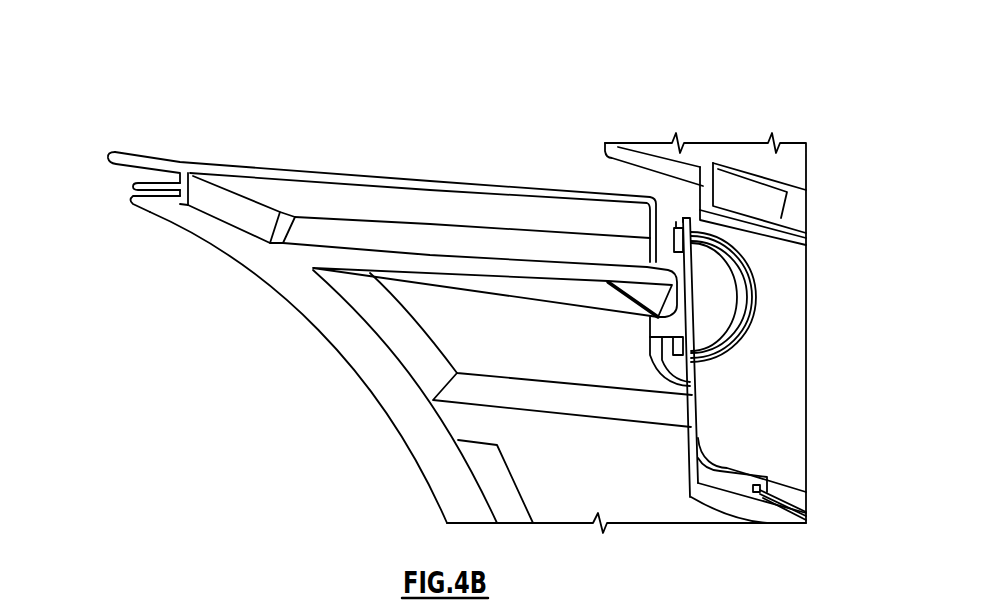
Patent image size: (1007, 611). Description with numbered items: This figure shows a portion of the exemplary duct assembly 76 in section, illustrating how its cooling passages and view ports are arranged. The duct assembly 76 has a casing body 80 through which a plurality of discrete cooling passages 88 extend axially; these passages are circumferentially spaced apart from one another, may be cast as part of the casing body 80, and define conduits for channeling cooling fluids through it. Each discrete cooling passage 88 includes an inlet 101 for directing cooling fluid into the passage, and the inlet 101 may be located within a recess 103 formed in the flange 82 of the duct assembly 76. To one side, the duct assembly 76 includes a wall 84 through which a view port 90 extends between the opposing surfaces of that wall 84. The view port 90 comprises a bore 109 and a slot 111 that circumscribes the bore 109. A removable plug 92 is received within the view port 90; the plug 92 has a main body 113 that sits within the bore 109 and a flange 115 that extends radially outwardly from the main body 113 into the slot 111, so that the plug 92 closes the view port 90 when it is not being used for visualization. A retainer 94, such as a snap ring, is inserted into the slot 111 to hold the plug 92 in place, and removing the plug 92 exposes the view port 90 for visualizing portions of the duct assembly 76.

The duct assembly 76 is at (470, 100).
The casing body 80 is at (420, 178).
The flange 82 is at (155, 152).
The wall 84 is at (786, 425).
The discrete cooling passage 88 is at (310, 242).
The view port 90 is at (745, 335).
The plug 92 is at (720, 302).
The retainer 94 is at (740, 278).
The inlet 101 is at (276, 236).
The recess 103 is at (147, 186).
The bore 109 is at (662, 360).
The slot 111 is at (699, 386).
The main body 113 is at (660, 256).
The flange 115 is at (680, 248).